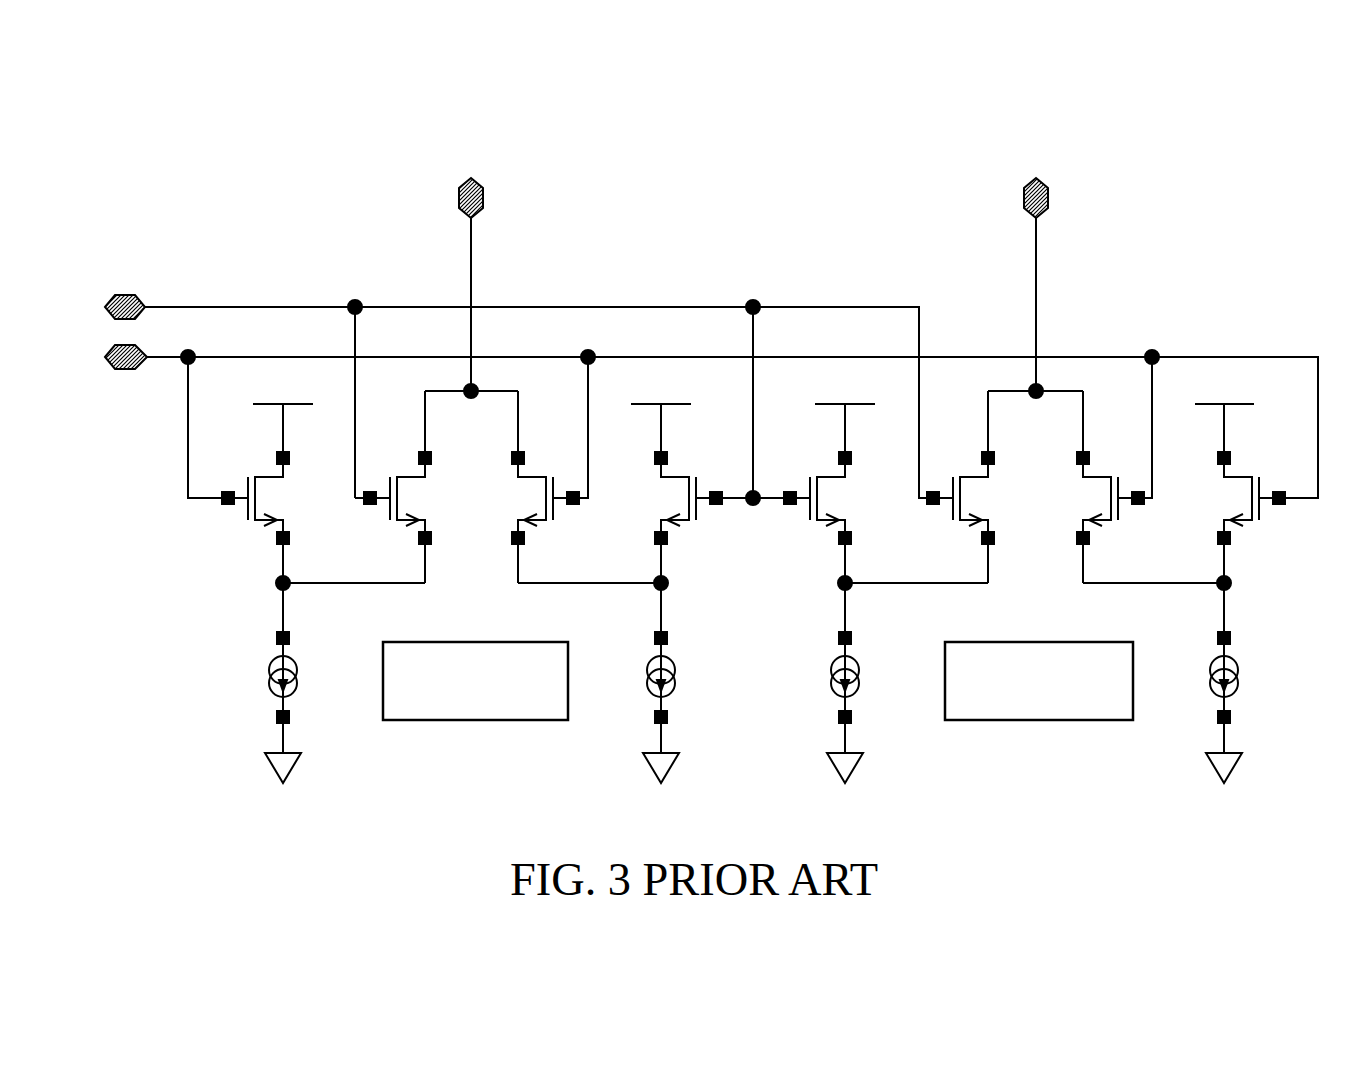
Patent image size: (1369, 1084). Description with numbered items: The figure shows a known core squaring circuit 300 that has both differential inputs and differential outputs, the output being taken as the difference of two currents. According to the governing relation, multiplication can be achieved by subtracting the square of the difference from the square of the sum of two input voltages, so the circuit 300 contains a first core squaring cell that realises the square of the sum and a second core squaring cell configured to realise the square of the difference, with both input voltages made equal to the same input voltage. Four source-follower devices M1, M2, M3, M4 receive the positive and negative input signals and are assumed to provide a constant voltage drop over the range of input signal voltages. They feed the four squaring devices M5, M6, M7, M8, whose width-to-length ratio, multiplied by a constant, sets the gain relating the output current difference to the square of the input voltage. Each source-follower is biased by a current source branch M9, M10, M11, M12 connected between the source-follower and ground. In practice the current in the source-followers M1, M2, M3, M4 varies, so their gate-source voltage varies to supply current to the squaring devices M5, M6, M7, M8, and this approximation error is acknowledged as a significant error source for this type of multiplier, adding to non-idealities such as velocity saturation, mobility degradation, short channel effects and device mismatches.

The core squaring circuit 300 is at (693, 437).
The source-follower device M1 is at (267, 493).
The source-follower device M2 is at (672, 493).
The source-follower device M3 is at (830, 493).
The source-follower device M4 is at (1236, 493).
The squaring device M5 is at (407, 504).
The squaring device M6 is at (531, 517).
The squaring device M7 is at (971, 504).
The squaring device M8 is at (1096, 517).
The current source transistor M9 is at (293, 683).
The current source transistor M10 is at (677, 683).
The current source transistor M11 is at (860, 683).
The current source transistor M12 is at (1240, 683).